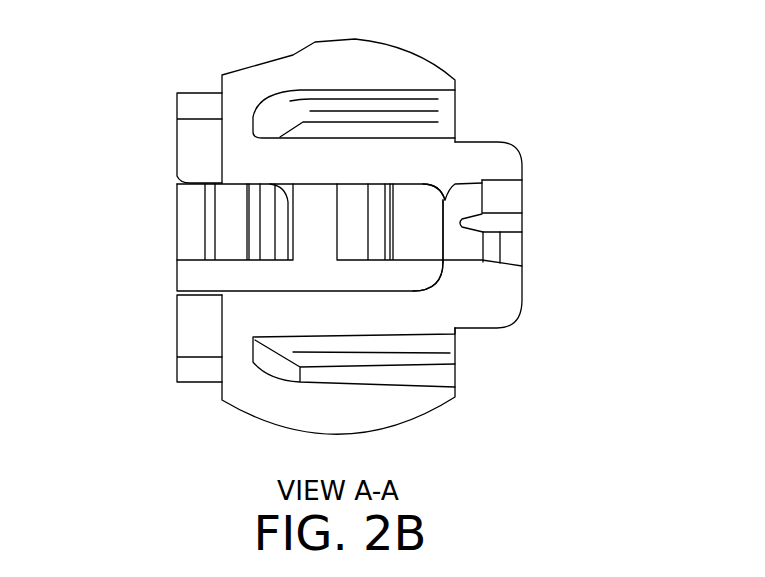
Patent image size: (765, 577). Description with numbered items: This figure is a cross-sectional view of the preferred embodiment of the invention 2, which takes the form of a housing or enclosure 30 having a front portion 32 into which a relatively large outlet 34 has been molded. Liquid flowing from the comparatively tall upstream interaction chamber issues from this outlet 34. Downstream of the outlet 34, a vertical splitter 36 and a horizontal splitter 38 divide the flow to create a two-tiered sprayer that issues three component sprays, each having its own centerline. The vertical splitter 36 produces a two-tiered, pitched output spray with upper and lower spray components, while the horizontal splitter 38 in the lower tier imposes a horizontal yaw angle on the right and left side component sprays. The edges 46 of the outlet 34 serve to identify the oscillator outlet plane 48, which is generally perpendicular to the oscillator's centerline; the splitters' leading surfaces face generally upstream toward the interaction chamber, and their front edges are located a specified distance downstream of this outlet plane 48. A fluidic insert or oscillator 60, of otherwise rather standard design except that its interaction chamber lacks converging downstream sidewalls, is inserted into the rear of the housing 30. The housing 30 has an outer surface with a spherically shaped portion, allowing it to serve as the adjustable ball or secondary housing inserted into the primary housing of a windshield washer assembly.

The preferred embodiment 2 is at (96, 70).
The housing 30 is at (455, 397).
The front portion 32 is at (480, 183).
The outlet 34 is at (450, 270).
The vertical splitter 36 is at (508, 190).
The horizontal splitter 38 is at (512, 250).
The outlet edges 46 is at (470, 193).
The oscillator outlet plane 48 is at (440, 232).
The fluidic insert 60 is at (192, 276).